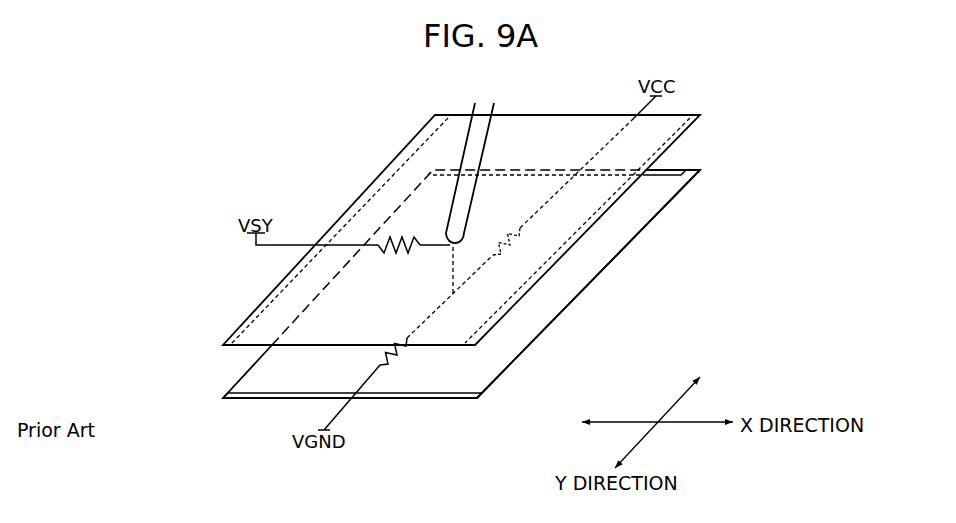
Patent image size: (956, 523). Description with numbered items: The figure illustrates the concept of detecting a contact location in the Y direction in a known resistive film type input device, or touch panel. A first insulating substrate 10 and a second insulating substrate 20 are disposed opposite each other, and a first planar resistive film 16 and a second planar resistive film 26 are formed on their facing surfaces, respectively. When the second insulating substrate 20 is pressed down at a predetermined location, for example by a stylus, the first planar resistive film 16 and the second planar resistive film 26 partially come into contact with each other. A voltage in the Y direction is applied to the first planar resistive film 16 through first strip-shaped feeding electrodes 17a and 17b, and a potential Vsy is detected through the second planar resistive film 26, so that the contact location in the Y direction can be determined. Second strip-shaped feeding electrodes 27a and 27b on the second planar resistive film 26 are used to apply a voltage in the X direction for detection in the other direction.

The first insulating substrate 10 is at (632, 247).
The first planar resistive film 16 is at (565, 293).
The first strip-shaped feeding electrode 17a is at (408, 398).
The first strip-shaped feeding electrode 17b is at (668, 172).
The second insulating substrate 20 is at (574, 109).
The second planar resistive film 26 is at (524, 131).
The second strip-shaped feeding electrode 27a is at (668, 142).
The second strip-shaped feeding electrode 27b is at (403, 156).